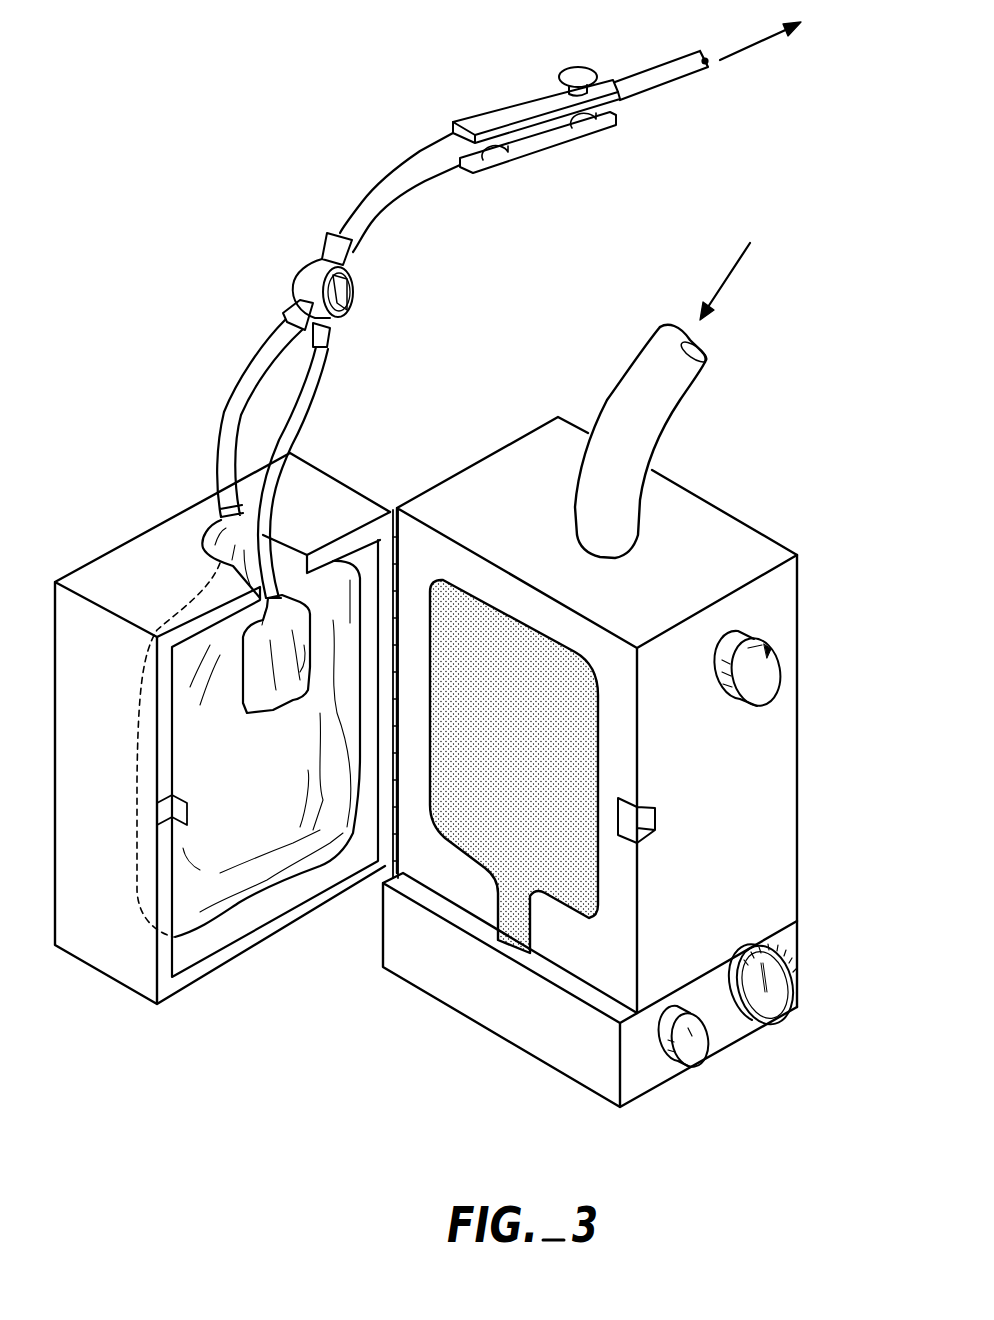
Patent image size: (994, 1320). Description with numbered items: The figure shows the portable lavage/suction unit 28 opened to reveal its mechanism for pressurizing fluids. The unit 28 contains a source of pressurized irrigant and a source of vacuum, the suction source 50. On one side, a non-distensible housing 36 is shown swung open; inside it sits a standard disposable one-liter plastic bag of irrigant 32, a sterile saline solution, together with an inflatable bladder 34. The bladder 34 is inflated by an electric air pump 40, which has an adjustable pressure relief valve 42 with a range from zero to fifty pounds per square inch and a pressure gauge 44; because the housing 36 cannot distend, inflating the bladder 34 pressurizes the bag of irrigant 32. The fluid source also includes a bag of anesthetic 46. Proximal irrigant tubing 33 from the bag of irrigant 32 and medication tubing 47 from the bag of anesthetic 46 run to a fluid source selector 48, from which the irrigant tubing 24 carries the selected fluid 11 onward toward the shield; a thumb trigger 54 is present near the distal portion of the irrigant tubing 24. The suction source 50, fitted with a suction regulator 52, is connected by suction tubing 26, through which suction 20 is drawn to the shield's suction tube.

The fluid 11 is at (747, 43).
The suction 20 is at (730, 270).
The irrigant tubing 24 is at (375, 190).
The suction tubing 26 is at (625, 375).
The lavage/suction unit 28 is at (760, 518).
The bag of irrigant 32 is at (213, 880).
The proximal irrigant tubing 33 is at (218, 430).
The inflatable bladder 34 is at (480, 842).
The non-distensible housing 36 is at (122, 562).
The air pump 40 is at (800, 947).
The pressure relief valve 42 is at (707, 1043).
The pressure gauge 44 is at (790, 988).
The bag of anesthetic 46 is at (270, 683).
The medication tubing 47 is at (290, 420).
The fluid source selector 48 is at (300, 272).
The suction source 50 is at (787, 597).
The suction regulator 52 is at (783, 680).
The thumb trigger 54 is at (487, 112).